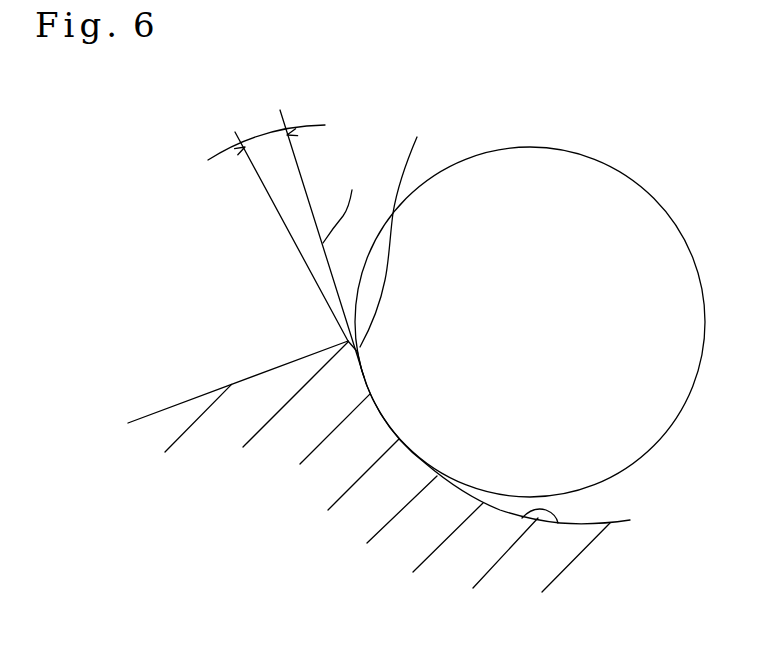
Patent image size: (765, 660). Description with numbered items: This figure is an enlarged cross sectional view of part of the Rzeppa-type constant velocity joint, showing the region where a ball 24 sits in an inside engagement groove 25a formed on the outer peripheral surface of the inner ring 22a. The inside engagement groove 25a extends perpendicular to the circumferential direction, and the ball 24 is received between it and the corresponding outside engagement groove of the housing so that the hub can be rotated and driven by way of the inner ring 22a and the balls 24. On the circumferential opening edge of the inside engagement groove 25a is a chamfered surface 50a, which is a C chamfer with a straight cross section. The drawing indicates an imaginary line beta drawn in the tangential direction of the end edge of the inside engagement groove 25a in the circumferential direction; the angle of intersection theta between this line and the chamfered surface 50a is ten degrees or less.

The ball 24 is at (647, 242).
The chamfered surface 50a is at (265, 137).
The inner ring 22a is at (307, 408).
The inside engagement groove 25a is at (522, 517).